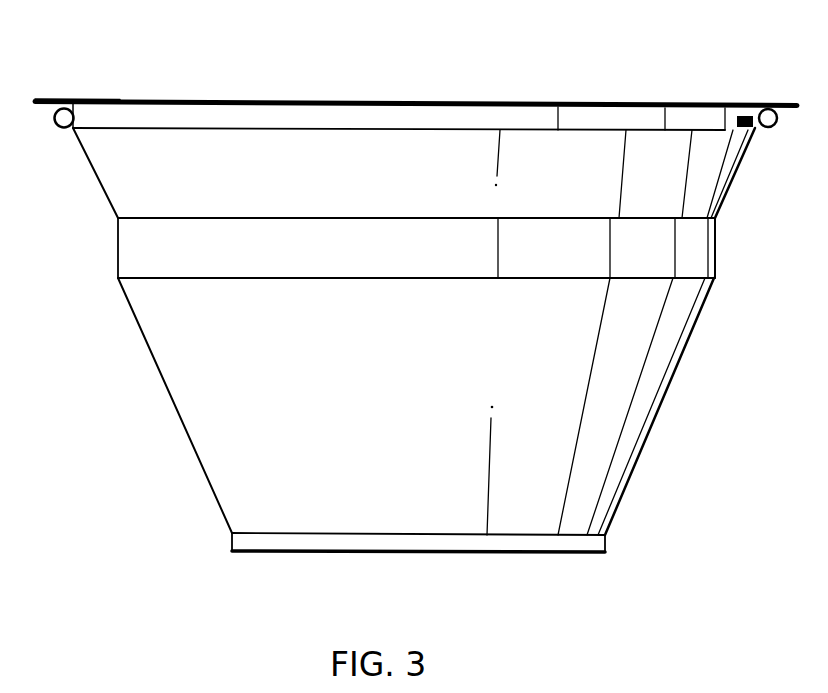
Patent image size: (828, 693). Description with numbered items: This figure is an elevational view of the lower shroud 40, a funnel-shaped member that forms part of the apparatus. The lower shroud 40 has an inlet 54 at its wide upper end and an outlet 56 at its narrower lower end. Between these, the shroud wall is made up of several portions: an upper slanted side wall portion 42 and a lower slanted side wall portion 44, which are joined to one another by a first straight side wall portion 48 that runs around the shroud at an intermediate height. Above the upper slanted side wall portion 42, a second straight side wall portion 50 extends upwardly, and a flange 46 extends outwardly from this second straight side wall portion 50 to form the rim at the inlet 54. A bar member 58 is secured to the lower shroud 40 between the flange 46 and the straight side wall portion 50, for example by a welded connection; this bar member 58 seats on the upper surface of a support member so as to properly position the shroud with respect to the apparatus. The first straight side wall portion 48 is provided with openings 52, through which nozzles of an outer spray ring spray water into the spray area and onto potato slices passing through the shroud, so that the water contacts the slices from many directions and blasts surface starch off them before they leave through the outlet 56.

The lower shroud 40 is at (768, 68).
The upper slanted side wall portion 42 is at (108, 196).
The lower slanted side wall portion 44 is at (152, 362).
The flange 46 is at (42, 98).
The first straight side wall portion 48 is at (117, 257).
The second straight side wall portion 50 is at (728, 185).
The openings 52 is at (688, 252).
The inlet 54 is at (485, 100).
The outlet 56 is at (543, 552).
The bar member 58 is at (57, 128).